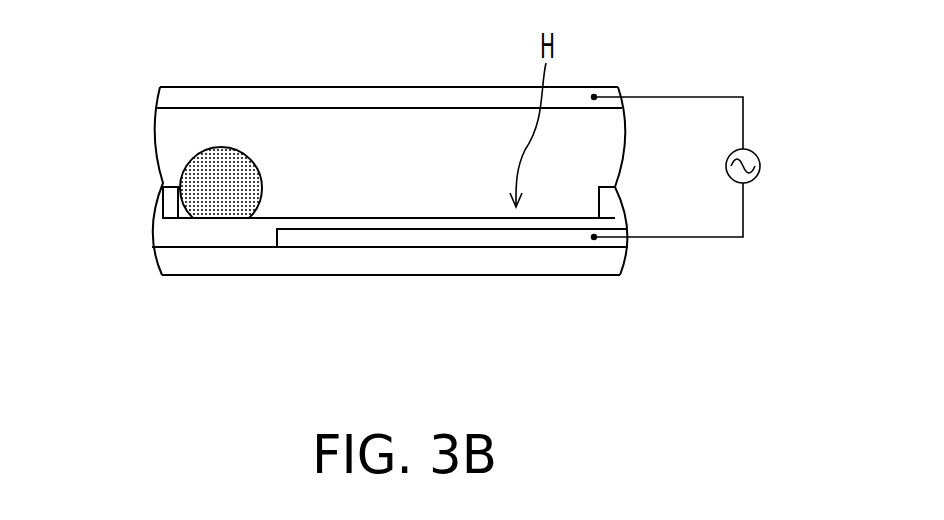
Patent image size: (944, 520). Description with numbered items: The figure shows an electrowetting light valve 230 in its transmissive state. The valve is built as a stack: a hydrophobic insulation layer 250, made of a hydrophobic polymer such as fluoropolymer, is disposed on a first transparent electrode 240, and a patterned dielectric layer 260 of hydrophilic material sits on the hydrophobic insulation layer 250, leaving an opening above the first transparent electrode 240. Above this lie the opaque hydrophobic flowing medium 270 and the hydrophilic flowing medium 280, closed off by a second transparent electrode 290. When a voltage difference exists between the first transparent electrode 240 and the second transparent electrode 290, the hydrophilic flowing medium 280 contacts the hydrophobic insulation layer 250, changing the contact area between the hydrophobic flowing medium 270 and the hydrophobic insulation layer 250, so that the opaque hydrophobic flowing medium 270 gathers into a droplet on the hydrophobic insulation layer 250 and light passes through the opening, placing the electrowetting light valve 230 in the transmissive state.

The second transparent electrode 290 is at (180, 99).
The hydrophilic flowing medium 280 is at (178, 130).
The hydrophobic flowing medium 270 is at (205, 175).
The patterned dielectric layer 260 is at (168, 205).
The hydrophobic insulation layer 250 is at (178, 235).
The first transparent electrode 240 is at (407, 237).
The electrowetting light valve 230 is at (775, 338).